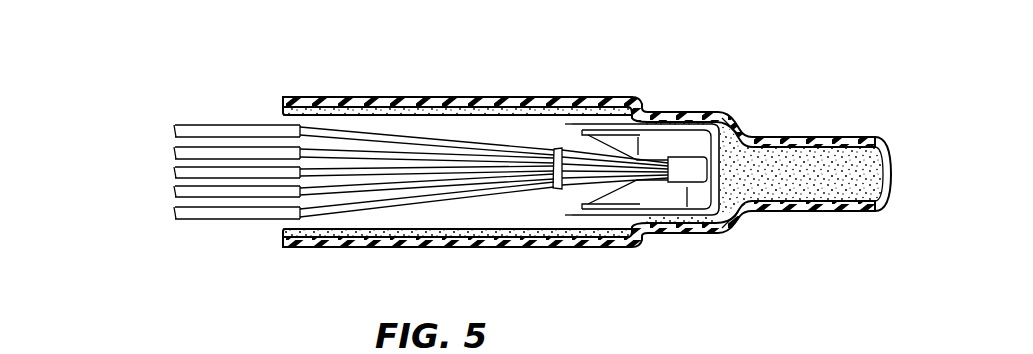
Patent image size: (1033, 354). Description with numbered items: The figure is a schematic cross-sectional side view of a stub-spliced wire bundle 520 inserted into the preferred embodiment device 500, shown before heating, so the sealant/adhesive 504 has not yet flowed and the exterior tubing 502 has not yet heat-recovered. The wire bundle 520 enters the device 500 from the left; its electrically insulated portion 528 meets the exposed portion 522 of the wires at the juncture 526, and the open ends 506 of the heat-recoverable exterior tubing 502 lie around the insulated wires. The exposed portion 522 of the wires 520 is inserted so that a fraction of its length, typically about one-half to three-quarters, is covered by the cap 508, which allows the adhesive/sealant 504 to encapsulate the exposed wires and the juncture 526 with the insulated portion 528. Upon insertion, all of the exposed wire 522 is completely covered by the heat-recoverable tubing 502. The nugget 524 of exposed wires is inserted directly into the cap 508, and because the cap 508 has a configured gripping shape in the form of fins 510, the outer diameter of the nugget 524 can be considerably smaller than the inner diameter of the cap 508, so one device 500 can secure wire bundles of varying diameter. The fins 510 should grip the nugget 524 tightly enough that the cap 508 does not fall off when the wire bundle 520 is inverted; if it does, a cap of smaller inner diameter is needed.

The device 500 is at (318, 68).
The exterior tubing 502 is at (580, 106).
The sealant/adhesive 504 is at (465, 108).
The tubing ends 506 is at (286, 118).
The cap 508 is at (752, 136).
The fins 510 is at (673, 142).
The wire bundle 520 is at (172, 224).
The exposed portion of wires 522 is at (583, 180).
The nugget 524 is at (693, 138).
The juncture 526 is at (567, 148).
The electrically insulated portion 528 is at (555, 168).